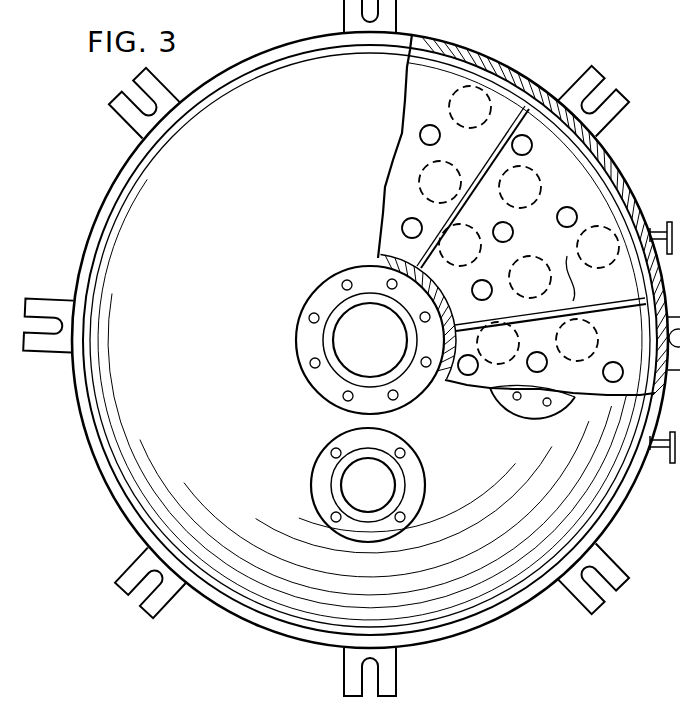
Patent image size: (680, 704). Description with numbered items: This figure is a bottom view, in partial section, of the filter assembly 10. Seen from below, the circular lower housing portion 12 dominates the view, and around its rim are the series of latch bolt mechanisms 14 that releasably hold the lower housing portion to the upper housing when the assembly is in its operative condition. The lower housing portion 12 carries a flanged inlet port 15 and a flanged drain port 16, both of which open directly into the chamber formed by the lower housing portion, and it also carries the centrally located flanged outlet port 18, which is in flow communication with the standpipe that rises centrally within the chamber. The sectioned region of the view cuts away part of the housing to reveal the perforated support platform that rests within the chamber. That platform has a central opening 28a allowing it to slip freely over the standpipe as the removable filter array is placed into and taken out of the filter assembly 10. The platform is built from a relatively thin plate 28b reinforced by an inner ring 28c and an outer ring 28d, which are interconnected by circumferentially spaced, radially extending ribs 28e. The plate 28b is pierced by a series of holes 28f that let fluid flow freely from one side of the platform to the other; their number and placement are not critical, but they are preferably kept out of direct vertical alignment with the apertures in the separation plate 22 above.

The filter assembly 10 is at (122, 144).
The lower housing portion 12 is at (127, 238).
The latch bolt mechanisms 14 is at (580, 92).
The flanged inlet port 15 is at (518, 422).
The flanged drain port 16 is at (313, 465).
The flanged outlet port 18 is at (346, 272).
The separation plate 22 is at (665, 408).
The central opening 28a is at (463, 207).
The thin plate 28b is at (513, 273).
The inner ring 28c is at (482, 256).
The outer ring 28d is at (583, 174).
The ribs 28e is at (586, 248).
The holes 28f is at (535, 354).